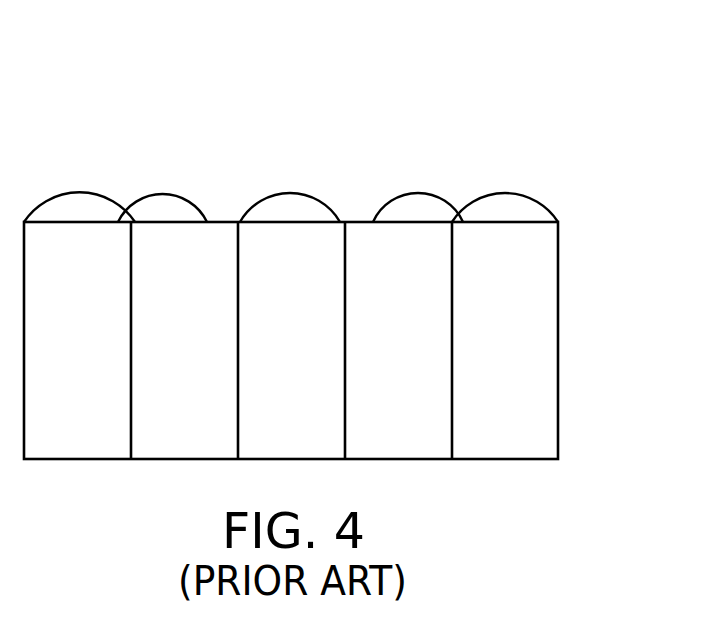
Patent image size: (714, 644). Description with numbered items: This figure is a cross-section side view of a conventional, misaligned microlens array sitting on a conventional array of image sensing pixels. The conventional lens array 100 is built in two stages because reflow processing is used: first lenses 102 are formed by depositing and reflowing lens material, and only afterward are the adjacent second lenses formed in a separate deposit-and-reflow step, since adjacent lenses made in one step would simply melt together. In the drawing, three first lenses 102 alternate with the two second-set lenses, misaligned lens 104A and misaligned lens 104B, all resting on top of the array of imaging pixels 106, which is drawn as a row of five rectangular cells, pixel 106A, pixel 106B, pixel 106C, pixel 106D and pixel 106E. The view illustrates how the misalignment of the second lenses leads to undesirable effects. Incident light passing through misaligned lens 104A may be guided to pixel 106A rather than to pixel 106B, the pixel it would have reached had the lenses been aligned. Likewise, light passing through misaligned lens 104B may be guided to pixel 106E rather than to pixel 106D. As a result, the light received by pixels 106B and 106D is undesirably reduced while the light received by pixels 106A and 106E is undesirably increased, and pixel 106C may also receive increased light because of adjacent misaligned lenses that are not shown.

The conventional lens array 100 is at (538, 72).
The first lenses 102 is at (80, 193).
The misaligned lens 104A is at (155, 193).
The misaligned lens 104B is at (428, 193).
The array of imaging pixels 106 is at (570, 369).
The pixel 106A is at (107, 352).
The pixel 106B is at (214, 352).
The pixel 106C is at (321, 352).
The pixel 106D is at (428, 352).
The pixel 106E is at (534, 352).